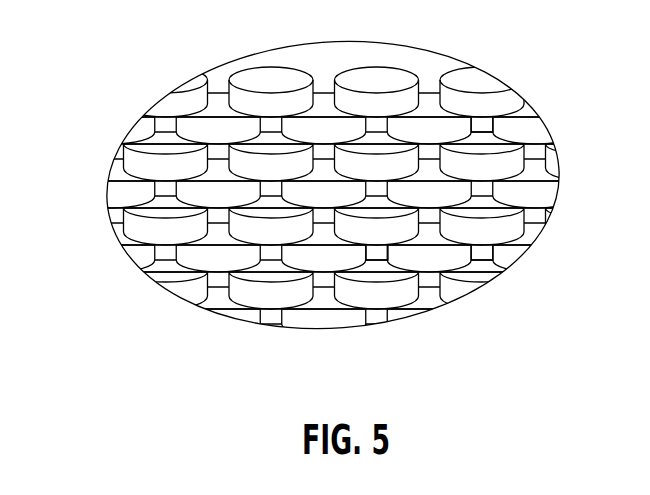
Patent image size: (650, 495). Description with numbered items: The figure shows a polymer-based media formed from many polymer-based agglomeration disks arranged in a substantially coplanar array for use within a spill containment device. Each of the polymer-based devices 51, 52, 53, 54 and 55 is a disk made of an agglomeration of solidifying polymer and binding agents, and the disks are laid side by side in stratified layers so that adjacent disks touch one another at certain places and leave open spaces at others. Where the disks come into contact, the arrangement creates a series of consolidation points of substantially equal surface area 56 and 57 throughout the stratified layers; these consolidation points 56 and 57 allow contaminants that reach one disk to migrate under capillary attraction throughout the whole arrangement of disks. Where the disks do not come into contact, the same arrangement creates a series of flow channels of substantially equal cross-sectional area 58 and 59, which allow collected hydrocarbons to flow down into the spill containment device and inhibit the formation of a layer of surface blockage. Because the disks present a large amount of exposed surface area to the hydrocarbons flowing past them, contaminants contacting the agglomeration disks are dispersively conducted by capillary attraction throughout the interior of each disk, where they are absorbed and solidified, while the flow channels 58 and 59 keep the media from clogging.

The polymer-based device 51 is at (455, 76).
The polymer-based device 52 is at (240, 76).
The polymer-based device 53 is at (135, 225).
The polymer-based device 54 is at (200, 287).
The polymer-based device 55 is at (395, 292).
The consolidation point 56 is at (495, 245).
The consolidation point 57 is at (353, 113).
The flow channel 58 is at (378, 253).
The flow channel 59 is at (481, 118).